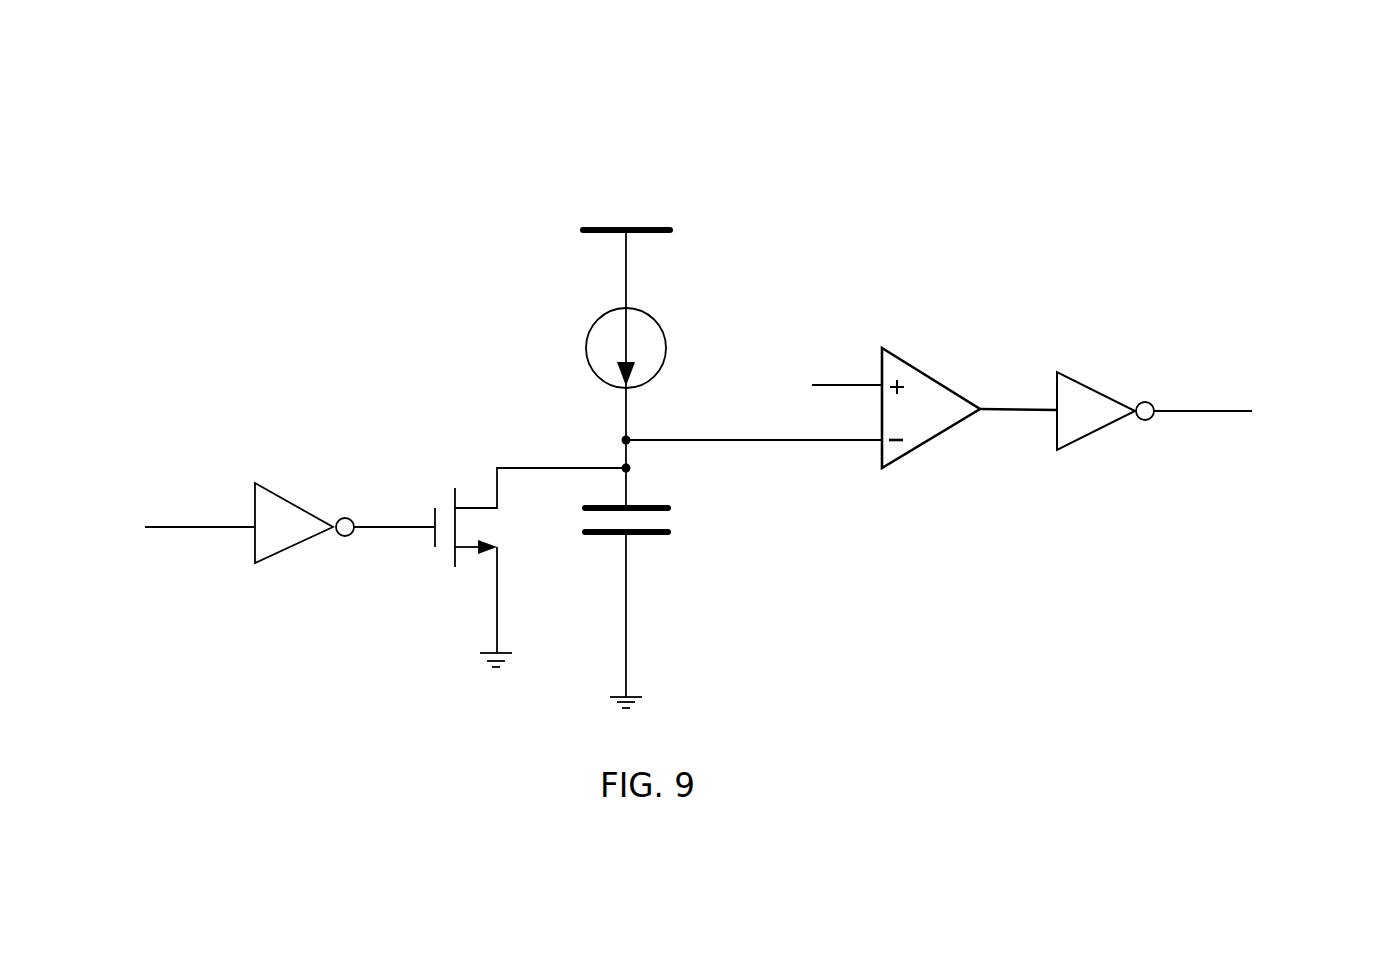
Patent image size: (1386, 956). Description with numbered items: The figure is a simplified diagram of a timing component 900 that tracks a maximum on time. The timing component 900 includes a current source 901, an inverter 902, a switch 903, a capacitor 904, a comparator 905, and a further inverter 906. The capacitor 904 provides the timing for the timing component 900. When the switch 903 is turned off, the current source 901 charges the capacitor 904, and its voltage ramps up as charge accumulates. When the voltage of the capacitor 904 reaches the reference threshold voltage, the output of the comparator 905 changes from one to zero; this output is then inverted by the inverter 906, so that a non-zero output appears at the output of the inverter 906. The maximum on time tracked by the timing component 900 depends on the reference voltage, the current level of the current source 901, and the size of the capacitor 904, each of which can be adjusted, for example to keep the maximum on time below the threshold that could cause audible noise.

The timing component 900 is at (1068, 137).
The current source 901 is at (650, 310).
The inverter 902 is at (257, 563).
The switch 903 is at (440, 490).
The capacitor 904 is at (650, 537).
The comparator 905 is at (938, 437).
The inverter 906 is at (1093, 388).